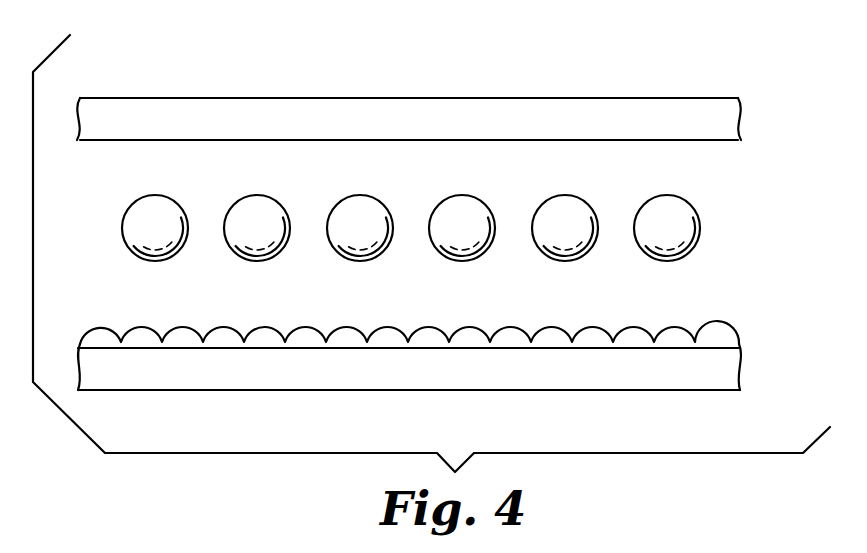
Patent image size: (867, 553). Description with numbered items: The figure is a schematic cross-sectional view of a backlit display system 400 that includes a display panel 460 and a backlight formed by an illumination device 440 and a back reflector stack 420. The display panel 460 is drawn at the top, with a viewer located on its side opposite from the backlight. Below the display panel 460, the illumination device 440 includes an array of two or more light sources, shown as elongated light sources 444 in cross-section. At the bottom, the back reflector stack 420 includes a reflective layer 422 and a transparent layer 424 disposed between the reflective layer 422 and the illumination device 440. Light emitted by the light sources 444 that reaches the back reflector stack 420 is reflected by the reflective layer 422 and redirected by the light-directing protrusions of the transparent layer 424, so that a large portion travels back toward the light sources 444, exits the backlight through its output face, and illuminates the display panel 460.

The backlit display system 400 is at (441, 241).
The display panel 460 is at (752, 115).
The illumination device 440 is at (467, 202).
The elongated light sources 444 is at (643, 213).
The back reflector stack 420 is at (462, 353).
The transparent layer 424 is at (682, 337).
The reflective layer 422 is at (632, 380).